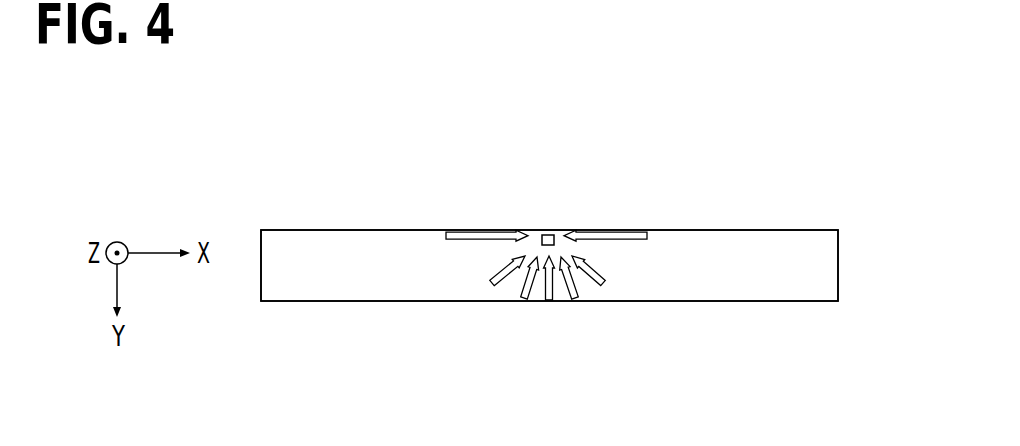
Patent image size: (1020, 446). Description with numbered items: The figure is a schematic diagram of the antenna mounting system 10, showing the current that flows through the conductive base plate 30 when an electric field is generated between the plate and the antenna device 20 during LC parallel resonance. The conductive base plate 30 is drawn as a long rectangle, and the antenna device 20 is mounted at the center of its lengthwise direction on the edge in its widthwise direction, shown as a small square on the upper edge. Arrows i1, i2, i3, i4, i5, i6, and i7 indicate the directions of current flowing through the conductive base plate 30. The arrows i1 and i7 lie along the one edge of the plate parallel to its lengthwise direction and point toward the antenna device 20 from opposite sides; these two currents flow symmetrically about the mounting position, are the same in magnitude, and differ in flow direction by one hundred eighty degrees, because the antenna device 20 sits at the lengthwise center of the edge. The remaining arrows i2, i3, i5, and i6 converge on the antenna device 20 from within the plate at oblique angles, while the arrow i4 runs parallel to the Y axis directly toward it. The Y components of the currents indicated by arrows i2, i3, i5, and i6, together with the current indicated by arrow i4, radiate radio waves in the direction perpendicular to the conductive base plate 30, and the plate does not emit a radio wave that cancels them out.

The antenna mounting system 10 is at (400, 155).
The antenna device 20 is at (540, 234).
The conductive base plate 30 is at (783, 302).
The arrow i1 is at (466, 230).
The arrow i2 is at (496, 273).
The arrow i3 is at (525, 288).
The arrow i4 is at (550, 291).
The arrow i5 is at (573, 288).
The arrow i6 is at (604, 275).
The arrow i7 is at (630, 229).